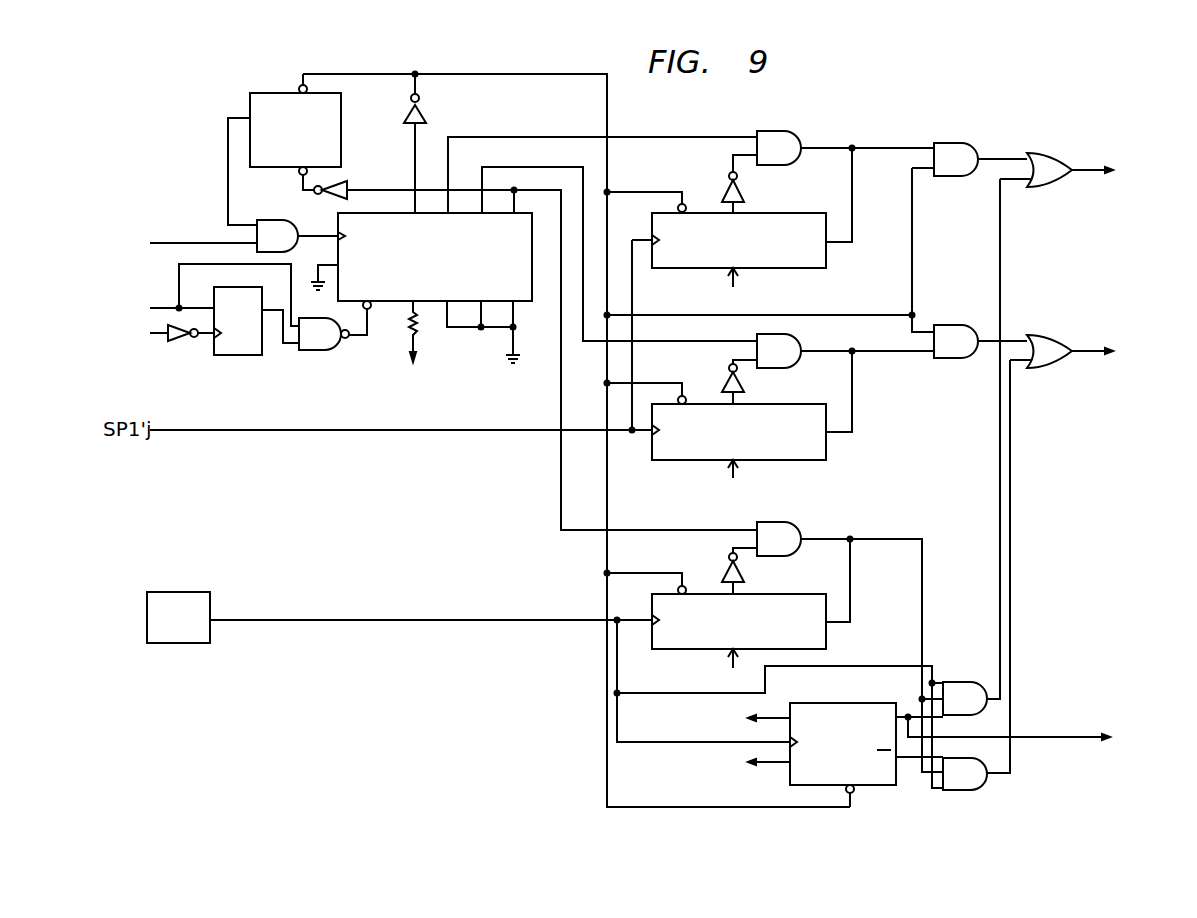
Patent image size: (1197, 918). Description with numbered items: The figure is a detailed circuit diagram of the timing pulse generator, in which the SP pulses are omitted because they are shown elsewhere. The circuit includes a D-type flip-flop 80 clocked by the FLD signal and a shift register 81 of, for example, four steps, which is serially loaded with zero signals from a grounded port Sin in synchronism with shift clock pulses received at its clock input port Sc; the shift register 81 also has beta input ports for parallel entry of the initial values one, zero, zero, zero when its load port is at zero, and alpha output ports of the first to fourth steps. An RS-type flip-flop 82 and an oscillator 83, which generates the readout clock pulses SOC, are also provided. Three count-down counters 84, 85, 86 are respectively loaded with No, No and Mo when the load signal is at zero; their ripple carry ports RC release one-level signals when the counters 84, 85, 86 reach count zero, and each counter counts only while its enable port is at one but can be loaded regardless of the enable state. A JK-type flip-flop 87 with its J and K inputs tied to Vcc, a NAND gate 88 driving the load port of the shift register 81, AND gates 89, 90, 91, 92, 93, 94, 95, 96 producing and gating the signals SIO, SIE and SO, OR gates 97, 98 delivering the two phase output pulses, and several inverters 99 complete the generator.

The D-type flip-flop 80 is at (240, 355).
The shift register 81 is at (532, 236).
The RS-type flip-flop 82 is at (341, 122).
The oscillator 83 is at (179, 592).
The count-down counter 84 is at (821, 213).
The count-down counter 85 is at (821, 404).
The count-down counter 86 is at (821, 594).
The JK-type flip-flop 87 is at (846, 703).
The NAND gate 88 is at (318, 350).
The AND gate 89 is at (270, 220).
The AND gate 90 is at (772, 131).
The AND gate 91 is at (795, 340).
The AND gate 92 is at (772, 522).
The AND gate 93 is at (951, 143).
The AND gate 94 is at (951, 325).
The AND gate 95 is at (963, 682).
The AND gate 96 is at (973, 761).
The OR gate 97 is at (1043, 153).
The OR gate 98 is at (1043, 335).
The inverter 99 is at (347, 181).